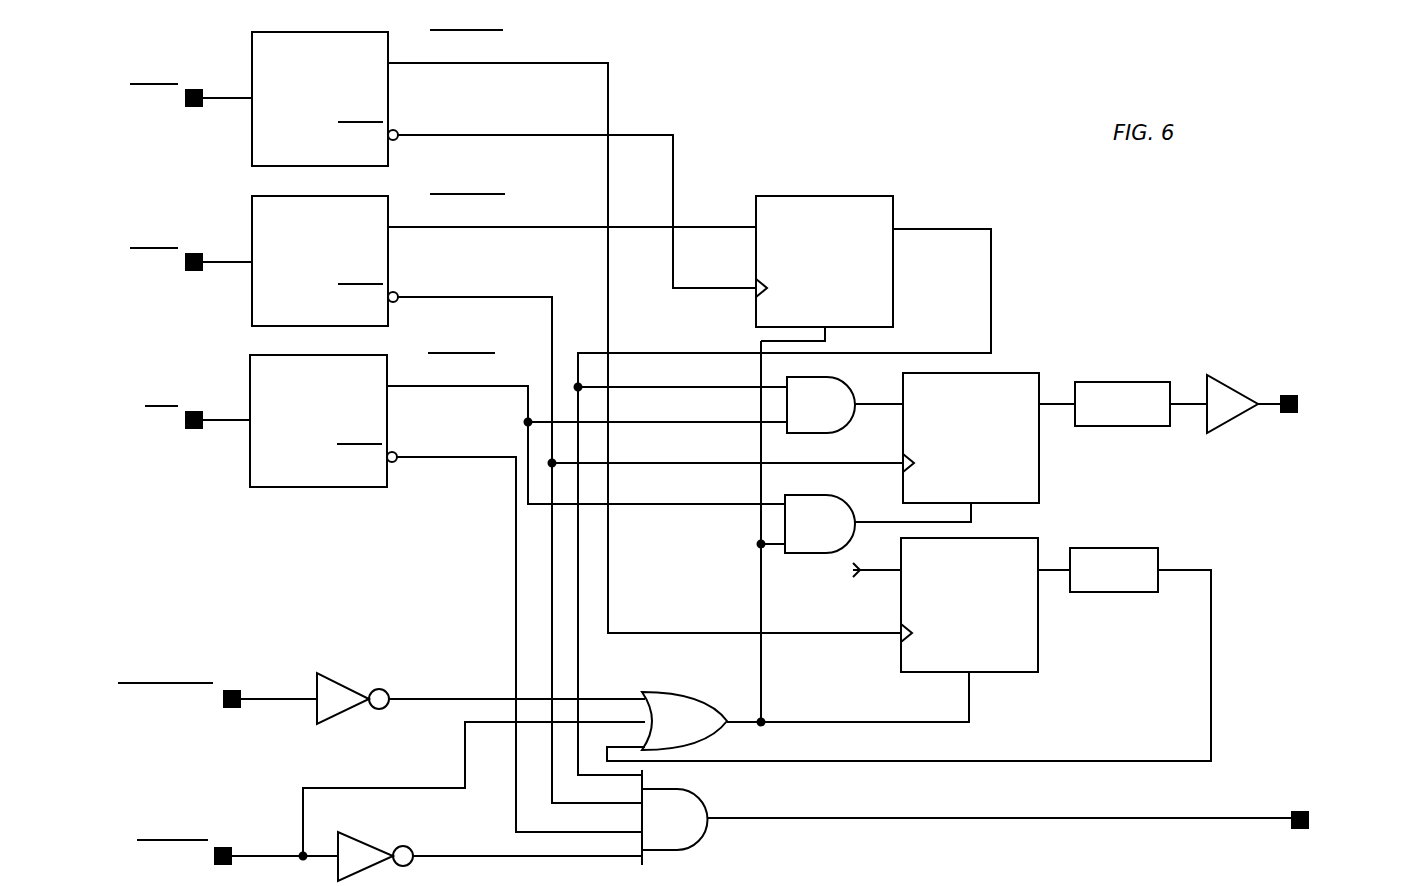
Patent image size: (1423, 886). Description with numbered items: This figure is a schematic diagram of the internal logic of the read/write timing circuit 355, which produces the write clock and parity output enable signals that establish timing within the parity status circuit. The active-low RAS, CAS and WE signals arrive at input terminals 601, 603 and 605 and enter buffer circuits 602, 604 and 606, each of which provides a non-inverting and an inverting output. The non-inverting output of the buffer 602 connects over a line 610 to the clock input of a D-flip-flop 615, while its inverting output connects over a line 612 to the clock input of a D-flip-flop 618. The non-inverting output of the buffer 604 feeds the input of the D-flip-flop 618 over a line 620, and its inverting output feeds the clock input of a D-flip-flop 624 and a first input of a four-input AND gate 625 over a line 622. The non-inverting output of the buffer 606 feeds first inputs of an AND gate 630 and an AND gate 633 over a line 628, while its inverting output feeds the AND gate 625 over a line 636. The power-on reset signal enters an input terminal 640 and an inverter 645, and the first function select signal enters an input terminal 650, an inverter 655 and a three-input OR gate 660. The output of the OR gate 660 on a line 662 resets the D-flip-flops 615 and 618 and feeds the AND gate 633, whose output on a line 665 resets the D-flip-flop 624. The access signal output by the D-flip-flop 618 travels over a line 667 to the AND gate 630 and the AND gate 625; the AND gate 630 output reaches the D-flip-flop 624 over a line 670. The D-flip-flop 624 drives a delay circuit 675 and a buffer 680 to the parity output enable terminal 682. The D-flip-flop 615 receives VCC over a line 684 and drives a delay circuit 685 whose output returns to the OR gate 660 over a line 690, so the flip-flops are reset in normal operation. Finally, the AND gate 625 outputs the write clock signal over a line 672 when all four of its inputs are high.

The read/write timing circuit 355 is at (778, 108).
The input terminal 601 is at (194, 108).
The buffer circuit 602 is at (250, 66).
The input terminal 603 is at (194, 252).
The buffer circuit 604 is at (378, 196).
The input terminal 605 is at (194, 410).
The buffer circuit 606 is at (378, 355).
The line 610 is at (560, 63).
The line 612 is at (583, 135).
The D-flip-flop 615 is at (1000, 672).
The D-flip-flop 618 is at (780, 196).
The line 620 is at (580, 227).
The line 622 is at (515, 297).
The D-flip-flop 624 is at (988, 373).
The four-input AND gate 625 is at (692, 843).
The line 628 is at (512, 386).
The AND gate 630 is at (787, 377).
The AND gate 633 is at (825, 495).
The line 636 is at (498, 457).
The input terminal 640 is at (280, 699).
The inverter 645 is at (335, 673).
The input terminal 650 is at (268, 856).
The inverter 655 is at (358, 832).
The three-input OR gate 660 is at (680, 692).
The line 662 is at (763, 678).
The line 665 is at (975, 522).
The line 667 is at (991, 278).
The line 670 is at (886, 406).
The line 672 is at (878, 820).
The delay circuit 675 is at (1150, 382).
The buffer 680 is at (1218, 375).
The parity output enable terminal 682 is at (1291, 412).
The line 684 is at (880, 572).
The delay circuit 685 is at (1115, 548).
The line 690 is at (988, 761).